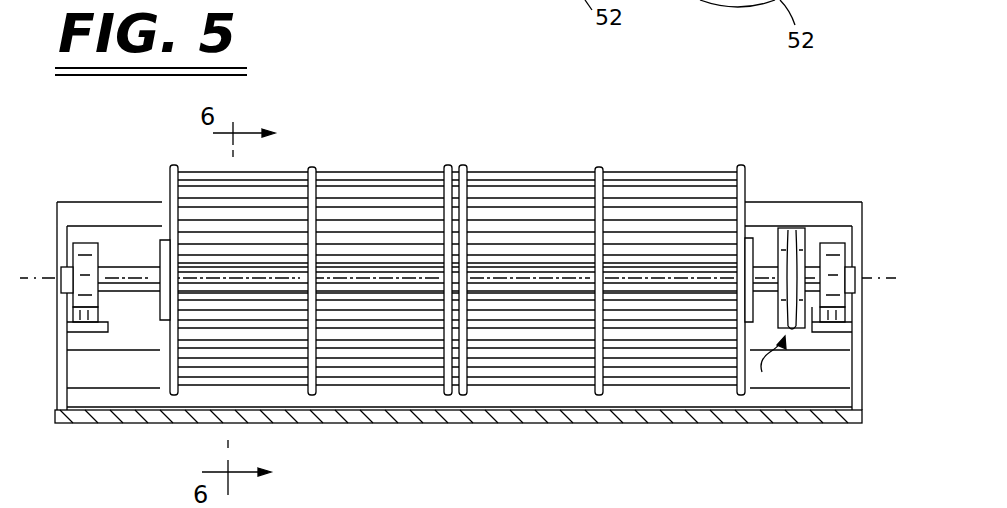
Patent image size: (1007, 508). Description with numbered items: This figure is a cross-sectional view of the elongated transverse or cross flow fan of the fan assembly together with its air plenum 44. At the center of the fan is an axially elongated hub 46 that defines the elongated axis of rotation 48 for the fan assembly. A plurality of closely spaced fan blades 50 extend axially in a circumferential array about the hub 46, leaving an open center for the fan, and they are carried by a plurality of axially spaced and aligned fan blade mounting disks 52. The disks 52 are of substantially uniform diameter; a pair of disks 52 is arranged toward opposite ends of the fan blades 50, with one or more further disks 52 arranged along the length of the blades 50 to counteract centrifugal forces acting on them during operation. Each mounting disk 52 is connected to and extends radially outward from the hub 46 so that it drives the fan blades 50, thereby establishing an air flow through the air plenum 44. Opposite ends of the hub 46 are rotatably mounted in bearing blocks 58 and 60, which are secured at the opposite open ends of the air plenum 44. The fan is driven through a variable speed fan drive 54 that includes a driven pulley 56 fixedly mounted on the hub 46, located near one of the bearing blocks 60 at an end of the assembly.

The air plenum 44 is at (604, 432).
The hub 46 is at (125, 275).
The axis of rotation 48 is at (22, 278).
The fan blades 50 is at (410, 200).
The fan blade mounting disks 52 is at (313, 166).
The variable speed fan drive 54 is at (783, 360).
The driven pulley 56 is at (790, 235).
The bearing block 58 is at (83, 250).
The bearing block 60 is at (832, 250).